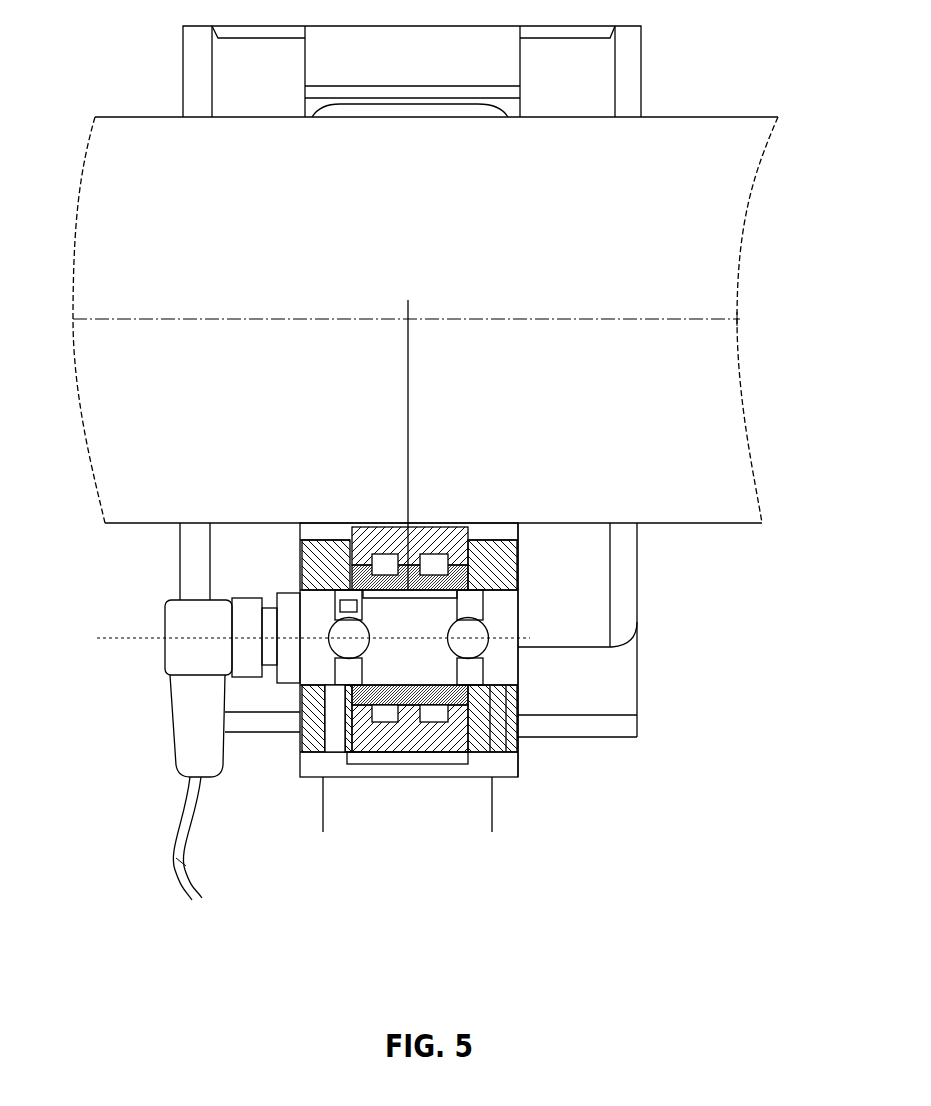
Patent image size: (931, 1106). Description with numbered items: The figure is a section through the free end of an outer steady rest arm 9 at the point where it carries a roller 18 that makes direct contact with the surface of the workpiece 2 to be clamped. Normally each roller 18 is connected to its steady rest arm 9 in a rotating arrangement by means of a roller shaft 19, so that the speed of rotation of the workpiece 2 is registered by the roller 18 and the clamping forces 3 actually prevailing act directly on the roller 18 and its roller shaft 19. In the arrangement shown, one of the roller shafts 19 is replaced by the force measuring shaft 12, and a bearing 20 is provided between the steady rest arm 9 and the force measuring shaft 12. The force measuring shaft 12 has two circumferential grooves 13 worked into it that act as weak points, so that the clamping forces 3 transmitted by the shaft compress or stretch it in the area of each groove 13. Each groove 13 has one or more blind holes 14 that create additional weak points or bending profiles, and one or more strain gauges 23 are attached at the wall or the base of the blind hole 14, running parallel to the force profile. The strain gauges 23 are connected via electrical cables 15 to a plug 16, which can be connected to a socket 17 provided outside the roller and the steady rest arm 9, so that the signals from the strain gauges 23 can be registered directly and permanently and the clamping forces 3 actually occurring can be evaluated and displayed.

The workpiece 2 is at (640, 465).
The clamping forces 3 is at (407, 392).
The steady rest arm 9 is at (522, 748).
The force measuring shaft 12 is at (488, 683).
The circumferential groove 13 is at (520, 687).
The blind hole 14 is at (340, 690).
The electrical cable 15 is at (177, 863).
The plug 16 is at (185, 743).
The socket 17 is at (298, 712).
The roller 18 is at (385, 765).
The roller shaft 19 is at (131, 652).
The bearing 20 is at (470, 567).
The strain gauge 23 is at (483, 648).